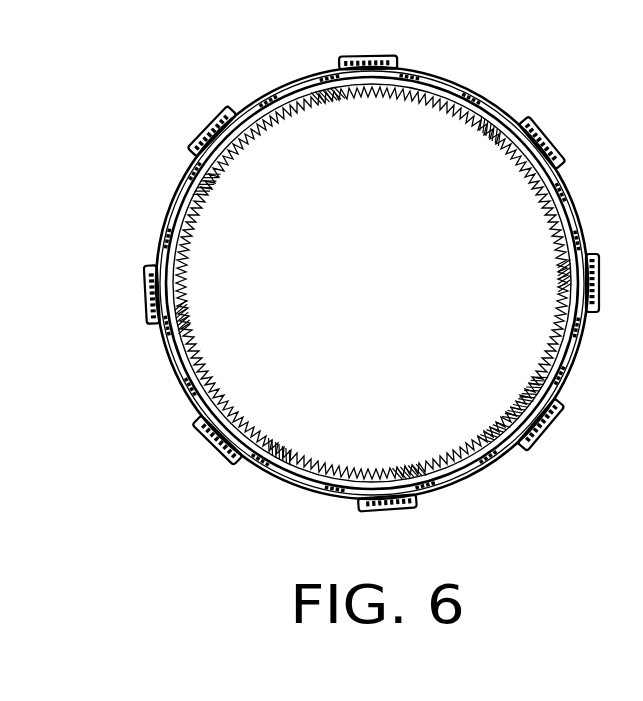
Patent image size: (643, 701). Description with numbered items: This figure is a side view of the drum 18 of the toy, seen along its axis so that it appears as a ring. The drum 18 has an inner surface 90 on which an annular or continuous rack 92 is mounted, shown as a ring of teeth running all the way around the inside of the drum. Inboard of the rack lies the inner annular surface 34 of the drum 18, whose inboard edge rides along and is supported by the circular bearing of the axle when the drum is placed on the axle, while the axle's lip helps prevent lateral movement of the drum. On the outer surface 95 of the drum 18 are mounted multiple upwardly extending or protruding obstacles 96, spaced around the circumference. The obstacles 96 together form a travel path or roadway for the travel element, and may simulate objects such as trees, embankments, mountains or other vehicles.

The drum 18 is at (382, 259).
The outer surface 95 is at (281, 95).
The inner surface 90 is at (263, 104).
The inner annular surface 34 is at (388, 92).
The annular or continuous rack 92 is at (484, 126).
The obstacles 96 is at (547, 140).